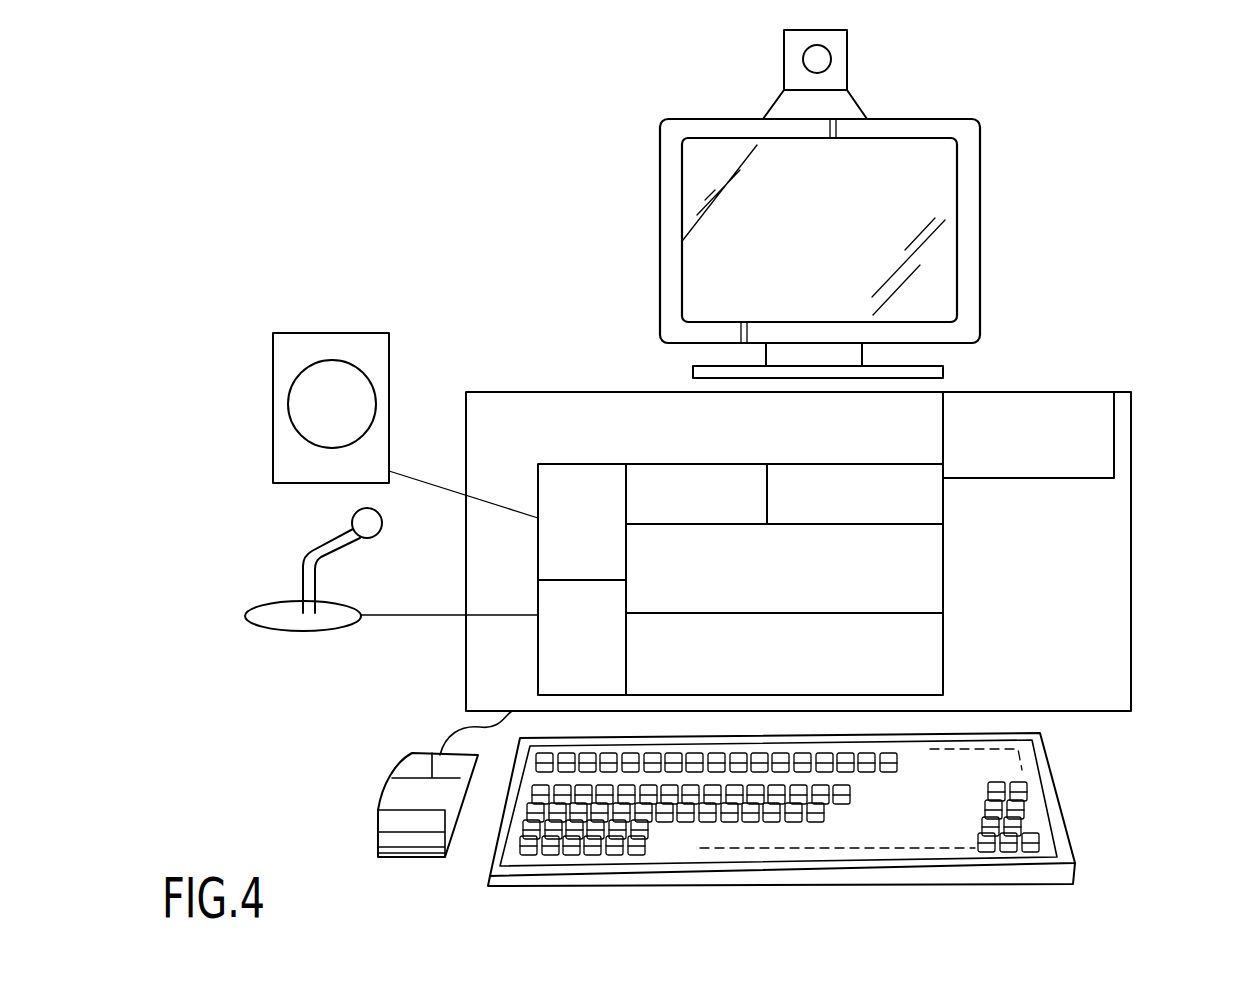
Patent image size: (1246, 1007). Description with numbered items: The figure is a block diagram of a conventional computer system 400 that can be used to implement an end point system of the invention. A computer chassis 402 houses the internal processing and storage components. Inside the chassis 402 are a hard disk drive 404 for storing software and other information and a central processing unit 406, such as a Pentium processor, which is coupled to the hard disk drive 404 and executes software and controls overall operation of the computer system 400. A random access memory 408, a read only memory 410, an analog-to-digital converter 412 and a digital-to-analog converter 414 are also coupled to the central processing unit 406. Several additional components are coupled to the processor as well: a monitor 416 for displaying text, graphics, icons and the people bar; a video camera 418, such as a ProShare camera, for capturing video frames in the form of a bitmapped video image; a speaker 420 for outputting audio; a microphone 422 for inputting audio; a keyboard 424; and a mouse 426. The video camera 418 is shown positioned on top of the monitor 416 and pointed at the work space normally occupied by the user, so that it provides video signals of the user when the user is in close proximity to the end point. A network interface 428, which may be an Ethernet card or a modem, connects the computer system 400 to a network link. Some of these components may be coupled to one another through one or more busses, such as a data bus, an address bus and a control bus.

The computer system 400 is at (1150, 235).
The computer chassis 402 is at (1131, 575).
The hard disk drive 404 is at (943, 645).
The central processing unit 406 is at (943, 562).
The random access memory 408 is at (656, 464).
The read only memory 410 is at (813, 464).
The analog-to-digital converter 412 is at (541, 662).
The digital-to-analog converter 414 is at (581, 464).
The monitor 416 is at (982, 240).
The video camera 418 is at (847, 58).
The speaker 420 is at (273, 368).
The microphone 422 is at (298, 578).
The keyboard 424 is at (1060, 793).
The mouse 426 is at (378, 782).
The network interface 428 is at (1098, 433).